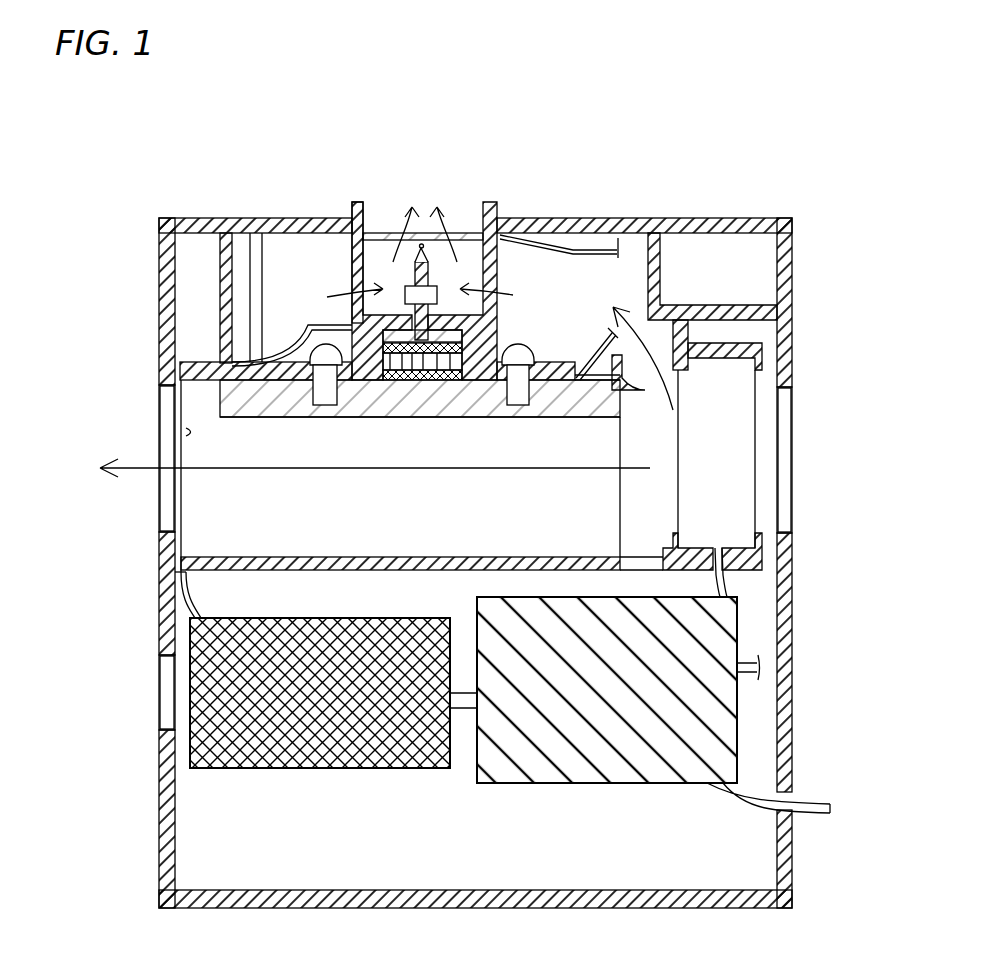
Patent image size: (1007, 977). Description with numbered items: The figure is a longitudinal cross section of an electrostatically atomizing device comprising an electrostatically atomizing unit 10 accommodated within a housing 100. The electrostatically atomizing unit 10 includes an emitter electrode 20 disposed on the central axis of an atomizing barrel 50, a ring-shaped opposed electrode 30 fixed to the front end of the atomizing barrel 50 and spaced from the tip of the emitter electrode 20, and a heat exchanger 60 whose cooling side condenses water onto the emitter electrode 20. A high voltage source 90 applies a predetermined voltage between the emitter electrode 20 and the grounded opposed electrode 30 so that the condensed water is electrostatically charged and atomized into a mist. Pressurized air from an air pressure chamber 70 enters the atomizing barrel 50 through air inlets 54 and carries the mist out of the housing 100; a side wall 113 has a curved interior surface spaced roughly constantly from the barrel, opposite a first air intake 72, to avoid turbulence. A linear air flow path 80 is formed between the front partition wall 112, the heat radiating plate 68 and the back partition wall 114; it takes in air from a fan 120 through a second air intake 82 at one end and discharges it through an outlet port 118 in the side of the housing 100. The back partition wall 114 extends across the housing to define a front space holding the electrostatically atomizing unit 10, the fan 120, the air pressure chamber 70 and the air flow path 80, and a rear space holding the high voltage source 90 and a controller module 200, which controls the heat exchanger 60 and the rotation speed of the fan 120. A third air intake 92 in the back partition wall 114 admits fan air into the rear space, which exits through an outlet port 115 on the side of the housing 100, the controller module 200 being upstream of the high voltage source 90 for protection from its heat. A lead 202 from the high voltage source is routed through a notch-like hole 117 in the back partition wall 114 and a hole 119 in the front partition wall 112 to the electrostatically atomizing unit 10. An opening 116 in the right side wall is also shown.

The housing 100 is at (797, 209).
The electrostatically atomizing unit 10 is at (344, 249).
The opposed electrode 30 is at (380, 233).
The atomizing barrel 50 is at (495, 262).
The air inlets 54 is at (497, 287).
The air pressure chamber 70 is at (272, 260).
The first air intake 72 is at (688, 320).
The side wall 113 is at (220, 280).
The front partition wall 112 is at (203, 365).
The hole 119 is at (183, 365).
The heat radiating plate 68 is at (237, 402).
The lead 202 is at (188, 433).
The fan 120 is at (737, 438).
The heat exchanger 60 is at (412, 365).
The emitter electrode 20 is at (487, 368).
The outlet port 118 is at (162, 492).
The right opening 116 is at (787, 467).
The linear air flow path 80 is at (243, 498).
The hole 117 is at (183, 565).
The second air intake 82 is at (620, 498).
The back partition wall 114 is at (200, 620).
The third air intake 92 is at (647, 567).
The outlet port 115 is at (163, 700).
The controller module 200 is at (715, 692).
The high voltage source 90 is at (197, 745).